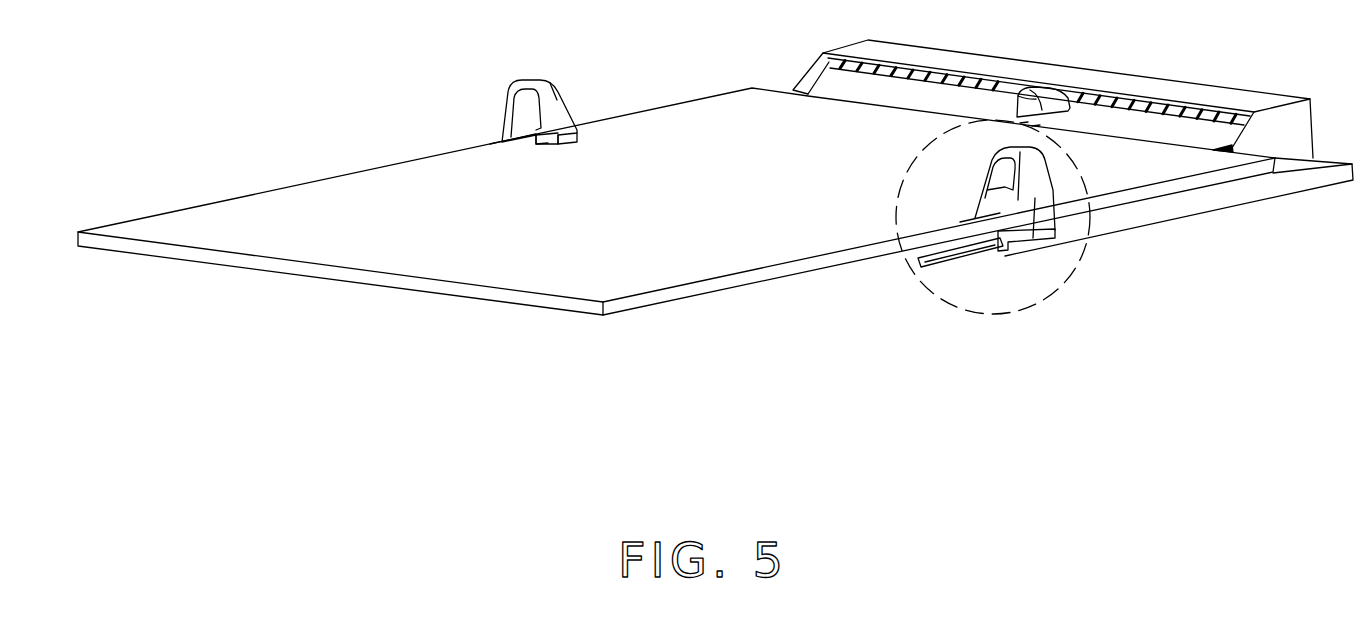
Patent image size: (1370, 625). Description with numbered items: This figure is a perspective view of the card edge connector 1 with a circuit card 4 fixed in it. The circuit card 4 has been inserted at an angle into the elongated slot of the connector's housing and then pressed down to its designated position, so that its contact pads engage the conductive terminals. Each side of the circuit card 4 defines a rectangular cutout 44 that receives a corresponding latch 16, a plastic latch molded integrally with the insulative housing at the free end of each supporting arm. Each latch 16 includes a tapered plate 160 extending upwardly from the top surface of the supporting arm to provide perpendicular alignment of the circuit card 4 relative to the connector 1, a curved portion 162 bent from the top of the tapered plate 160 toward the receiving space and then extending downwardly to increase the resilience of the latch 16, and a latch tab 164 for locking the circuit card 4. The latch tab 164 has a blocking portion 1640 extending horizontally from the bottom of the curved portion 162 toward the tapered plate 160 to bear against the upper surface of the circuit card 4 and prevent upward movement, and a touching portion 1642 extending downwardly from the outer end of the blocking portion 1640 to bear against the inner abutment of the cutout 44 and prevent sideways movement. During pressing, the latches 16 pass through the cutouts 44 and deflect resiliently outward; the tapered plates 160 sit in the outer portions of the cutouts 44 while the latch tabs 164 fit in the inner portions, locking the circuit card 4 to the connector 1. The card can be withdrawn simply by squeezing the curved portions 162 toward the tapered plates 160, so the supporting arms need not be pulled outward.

The card edge connector 1 is at (1241, 206).
The circuit card 4 is at (303, 282).
The latch 16 is at (750, 201).
The rectangular cutout 44 is at (499, 136).
The tapered plate 160 is at (517, 131).
The curved portion 162 is at (557, 98).
The latch tab 164 is at (984, 245).
The blocking portion 1640 is at (574, 136).
The touching portion 1642 is at (540, 140).